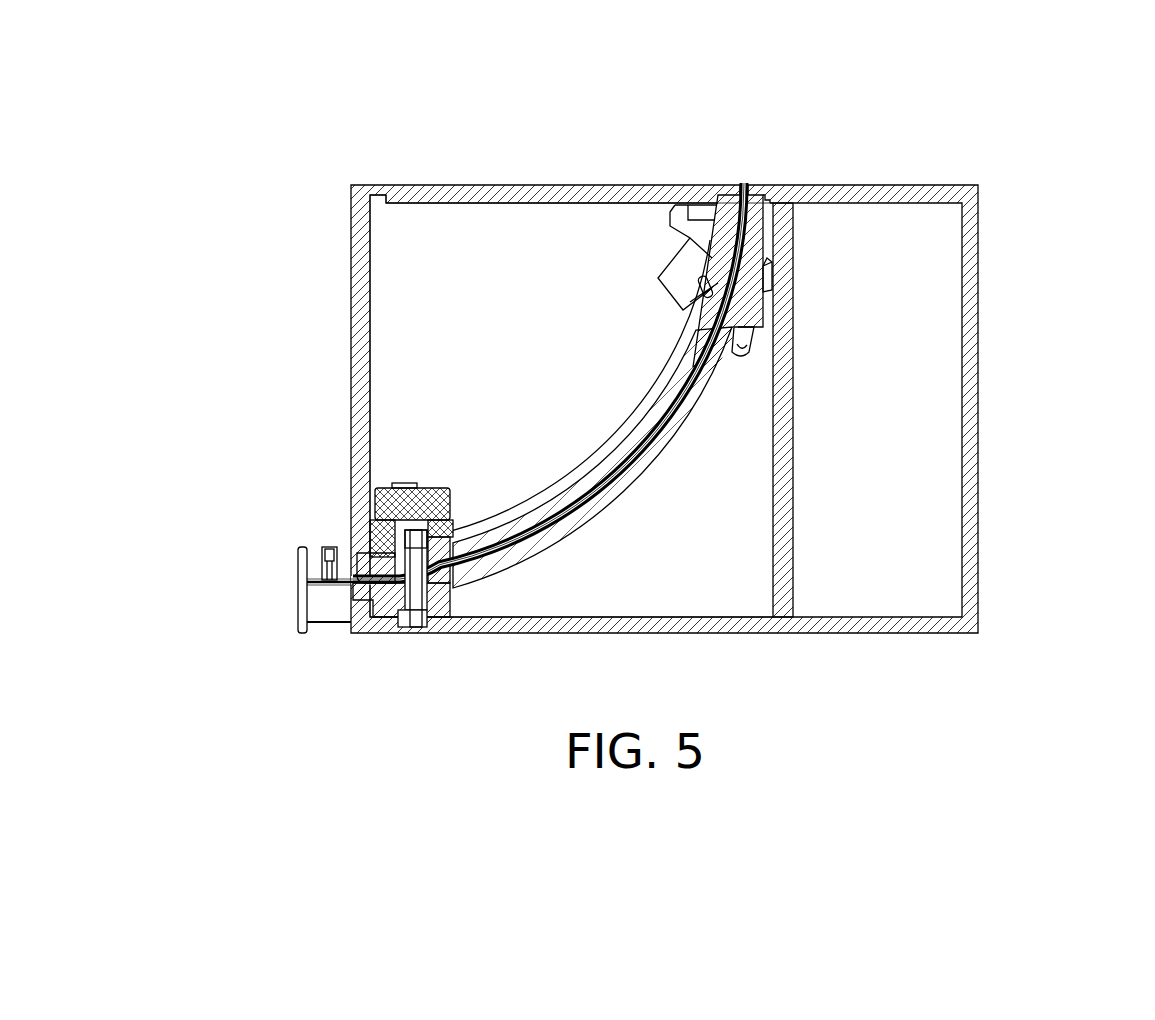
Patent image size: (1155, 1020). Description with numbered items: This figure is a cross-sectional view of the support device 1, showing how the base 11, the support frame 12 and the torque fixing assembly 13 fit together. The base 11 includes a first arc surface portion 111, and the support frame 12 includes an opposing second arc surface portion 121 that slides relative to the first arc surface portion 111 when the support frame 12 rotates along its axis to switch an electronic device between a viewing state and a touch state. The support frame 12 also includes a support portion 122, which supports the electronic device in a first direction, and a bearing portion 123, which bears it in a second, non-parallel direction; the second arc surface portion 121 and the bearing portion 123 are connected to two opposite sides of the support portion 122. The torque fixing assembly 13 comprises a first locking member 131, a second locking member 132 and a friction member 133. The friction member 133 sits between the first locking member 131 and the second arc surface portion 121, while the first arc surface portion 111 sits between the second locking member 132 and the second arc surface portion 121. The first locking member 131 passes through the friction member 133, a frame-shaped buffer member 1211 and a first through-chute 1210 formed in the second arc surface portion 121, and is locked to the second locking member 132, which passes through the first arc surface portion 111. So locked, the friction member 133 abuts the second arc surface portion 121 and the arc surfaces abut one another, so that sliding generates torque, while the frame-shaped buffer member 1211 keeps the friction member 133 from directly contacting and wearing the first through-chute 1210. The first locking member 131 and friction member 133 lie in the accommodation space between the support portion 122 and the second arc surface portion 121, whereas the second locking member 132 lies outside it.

The support device 1 is at (215, 138).
The base 11 is at (1003, 382).
The first arc surface portion 111 is at (757, 203).
The support frame 12 is at (478, 182).
The second arc surface portion 121 is at (745, 190).
The first through-chute 1210 is at (566, 491).
The frame-shaped buffer member 1211 is at (693, 277).
The support portion 122 is at (393, 237).
The bearing portion 123 is at (328, 608).
The torque fixing assembly 13 is at (190, 490).
The first locking member 131 is at (370, 517).
The second locking member 132 is at (350, 597).
The friction member 133 is at (370, 542).